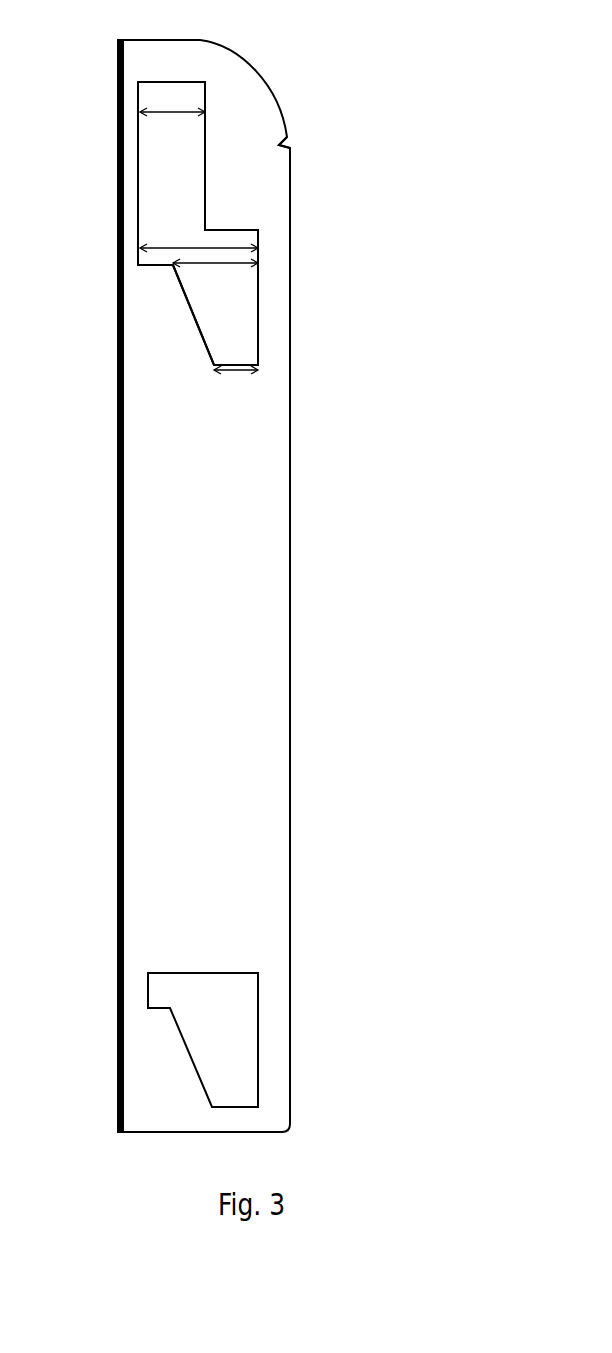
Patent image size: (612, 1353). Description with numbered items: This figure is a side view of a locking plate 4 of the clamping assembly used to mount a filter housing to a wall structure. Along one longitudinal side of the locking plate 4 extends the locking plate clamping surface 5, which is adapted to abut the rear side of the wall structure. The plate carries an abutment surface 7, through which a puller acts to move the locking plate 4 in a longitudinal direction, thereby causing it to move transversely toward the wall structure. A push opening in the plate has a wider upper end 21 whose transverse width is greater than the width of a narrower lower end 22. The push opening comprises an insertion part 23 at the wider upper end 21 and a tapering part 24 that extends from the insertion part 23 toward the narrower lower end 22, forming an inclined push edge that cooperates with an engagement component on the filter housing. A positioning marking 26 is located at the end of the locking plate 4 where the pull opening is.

The locking plate 4 is at (247, 652).
The locking plate clamping surface 5 is at (100, 921).
The abutment surface 7 is at (175, 80).
The wider upper end 21 is at (242, 275).
The narrower lower end 22 is at (233, 358).
The insertion part 23 is at (217, 240).
The tapering part 24 is at (233, 313).
The positioning marking 26 is at (283, 140).